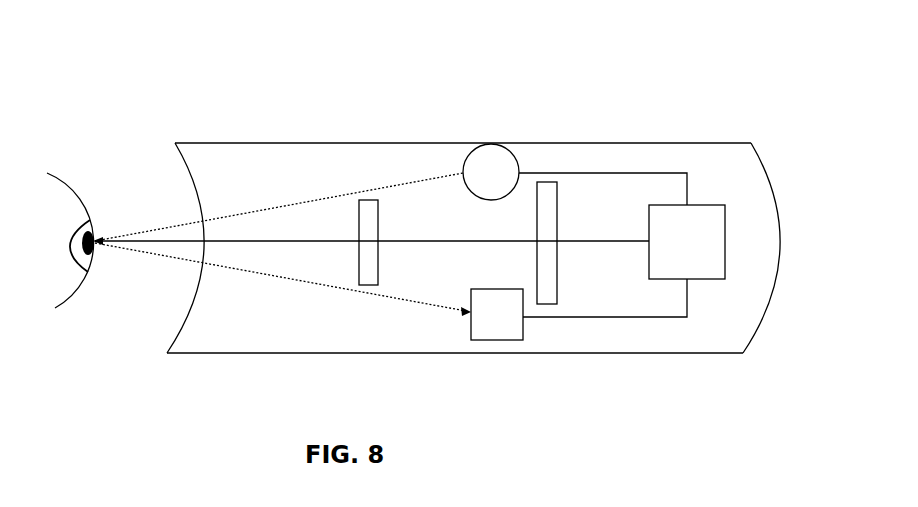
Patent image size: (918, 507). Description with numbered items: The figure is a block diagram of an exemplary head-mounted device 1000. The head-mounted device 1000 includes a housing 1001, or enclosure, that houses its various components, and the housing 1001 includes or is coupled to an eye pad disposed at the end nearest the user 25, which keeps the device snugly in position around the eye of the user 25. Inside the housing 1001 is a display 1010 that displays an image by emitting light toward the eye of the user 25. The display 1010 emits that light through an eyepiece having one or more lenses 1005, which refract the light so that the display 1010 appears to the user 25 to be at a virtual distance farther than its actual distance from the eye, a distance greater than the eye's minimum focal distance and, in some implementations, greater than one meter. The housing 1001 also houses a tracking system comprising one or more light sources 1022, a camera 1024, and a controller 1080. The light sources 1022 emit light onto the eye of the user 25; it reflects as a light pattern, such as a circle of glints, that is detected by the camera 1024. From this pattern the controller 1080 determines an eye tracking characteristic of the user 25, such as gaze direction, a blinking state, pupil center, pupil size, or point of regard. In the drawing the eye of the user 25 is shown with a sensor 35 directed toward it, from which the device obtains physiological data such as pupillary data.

The head-mounted device 1000 is at (224, 58).
The housing 1001 is at (598, 353).
The user 25 is at (67, 185).
The sensor 35 is at (90, 221).
The lenses 1005 is at (370, 200).
The light sources 1022 is at (487, 145).
The display 1010 is at (557, 227).
The camera 1024 is at (494, 340).
The controller 1080 is at (725, 247).